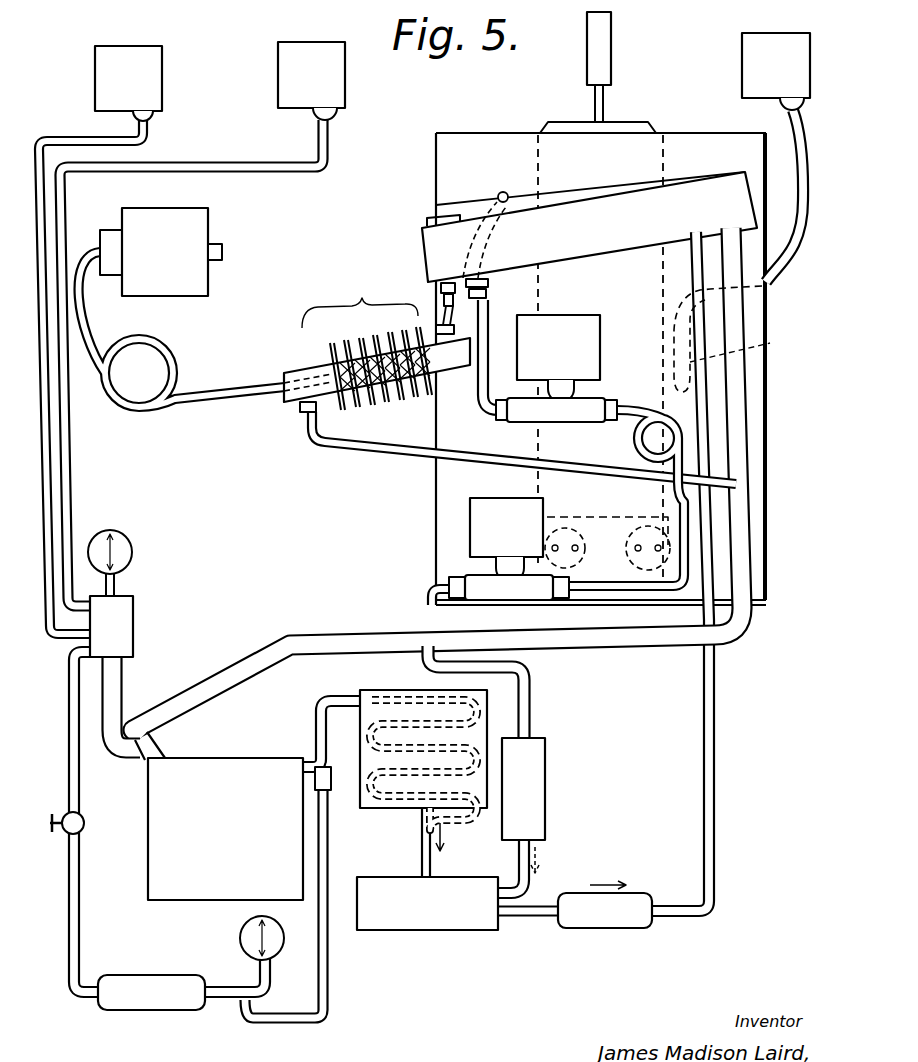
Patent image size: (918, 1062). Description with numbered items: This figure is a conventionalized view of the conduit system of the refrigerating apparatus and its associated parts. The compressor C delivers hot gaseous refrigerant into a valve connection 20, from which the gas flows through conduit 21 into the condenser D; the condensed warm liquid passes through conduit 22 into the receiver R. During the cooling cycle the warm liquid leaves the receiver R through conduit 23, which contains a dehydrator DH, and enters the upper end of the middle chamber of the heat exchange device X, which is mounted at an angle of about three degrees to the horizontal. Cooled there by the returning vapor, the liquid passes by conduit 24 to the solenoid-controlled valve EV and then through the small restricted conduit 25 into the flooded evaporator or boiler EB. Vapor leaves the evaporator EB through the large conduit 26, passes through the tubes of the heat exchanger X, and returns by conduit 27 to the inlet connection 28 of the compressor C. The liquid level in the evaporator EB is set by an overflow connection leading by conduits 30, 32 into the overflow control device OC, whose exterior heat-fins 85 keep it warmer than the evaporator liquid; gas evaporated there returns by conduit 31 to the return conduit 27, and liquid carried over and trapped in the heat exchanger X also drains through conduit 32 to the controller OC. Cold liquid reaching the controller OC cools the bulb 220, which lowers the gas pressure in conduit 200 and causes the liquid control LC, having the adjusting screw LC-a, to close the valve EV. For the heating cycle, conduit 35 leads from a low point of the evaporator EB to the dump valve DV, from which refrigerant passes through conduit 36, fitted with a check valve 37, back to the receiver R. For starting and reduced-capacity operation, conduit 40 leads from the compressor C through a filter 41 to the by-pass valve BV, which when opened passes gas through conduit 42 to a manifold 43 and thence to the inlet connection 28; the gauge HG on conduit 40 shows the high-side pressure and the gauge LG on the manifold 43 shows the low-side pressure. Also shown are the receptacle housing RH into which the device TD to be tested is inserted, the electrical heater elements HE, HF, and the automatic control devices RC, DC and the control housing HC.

The valve connection 20 is at (327, 786).
The conduit 21 is at (314, 720).
The conduit 22 is at (422, 851).
The conduit 23 is at (692, 263).
The conduit 24 is at (493, 403).
The small conduit 25 is at (642, 388).
The large conduit 26 is at (447, 208).
The conduit 27 is at (752, 437).
The inlet connection 28 is at (138, 727).
The overflow conduit 30 is at (491, 235).
The conduit 31 is at (393, 447).
The conduit 32 is at (443, 295).
The conduit 35 is at (642, 588).
The conduit 36 is at (530, 692).
The check valve 37 is at (533, 772).
The conduit 40 is at (335, 976).
The filter 41 is at (151, 992).
The conduit 42 is at (70, 772).
The manifold 43 is at (126, 617).
The heat-fins 85 is at (385, 341).
The conduit 200 is at (183, 396).
The bulb 220 is at (412, 398).
The control device DC is at (128, 83).
The control device RC is at (311, 81).
The automatic control device housing HC is at (776, 71).
The device to be tested TD is at (607, 48).
The evaporator or boiler EB is at (613, 143).
The receptacle housing RH is at (715, 123).
The heat exchange device X is at (582, 207).
The liquid control device LC is at (154, 252).
The adjusting screw LC-a is at (222, 252).
The overflow control chamber OC is at (377, 341).
The solenoid-controlled valve EV is at (558, 358).
The dump valve DV is at (509, 549).
The electrical heater element HF is at (577, 517).
The electrical heater element HE is at (647, 537).
The gauge LG is at (129, 559).
The by-pass valve BV is at (80, 822).
The gauge HG is at (240, 940).
The compressor C is at (225, 829).
The condenser D is at (366, 696).
The receiver R is at (458, 922).
The dehydrator DH is at (605, 904).